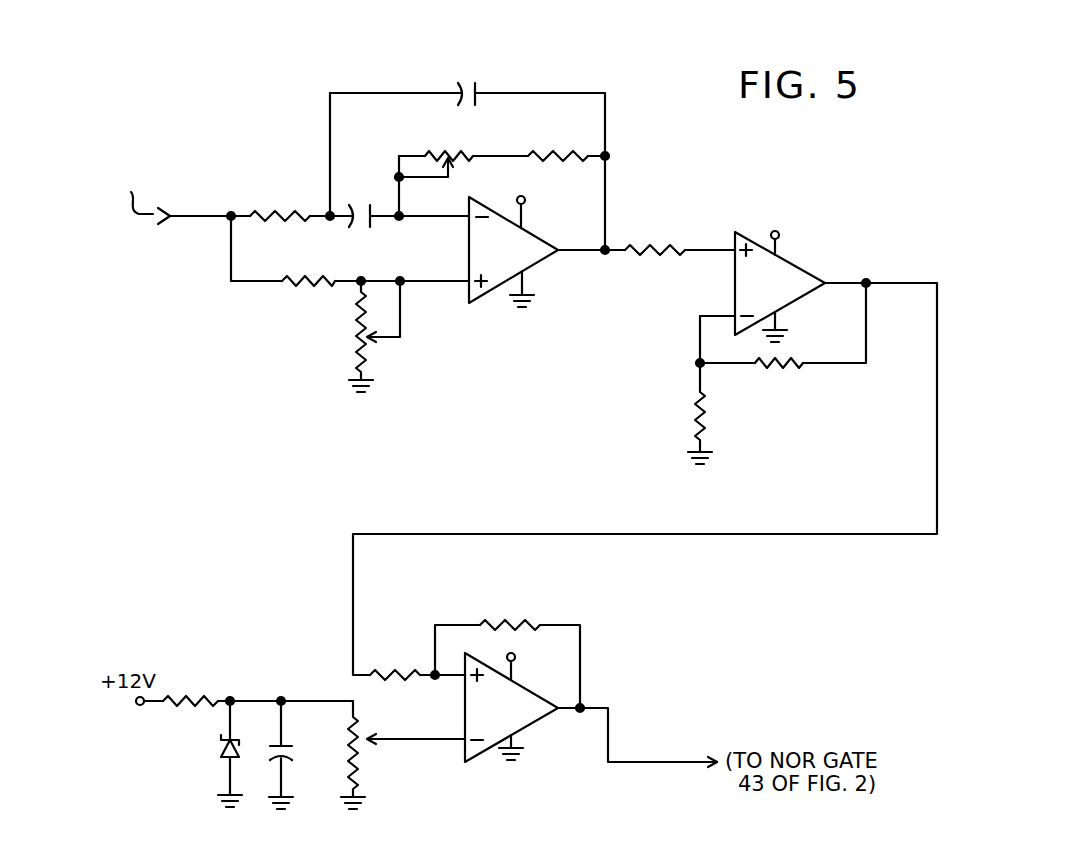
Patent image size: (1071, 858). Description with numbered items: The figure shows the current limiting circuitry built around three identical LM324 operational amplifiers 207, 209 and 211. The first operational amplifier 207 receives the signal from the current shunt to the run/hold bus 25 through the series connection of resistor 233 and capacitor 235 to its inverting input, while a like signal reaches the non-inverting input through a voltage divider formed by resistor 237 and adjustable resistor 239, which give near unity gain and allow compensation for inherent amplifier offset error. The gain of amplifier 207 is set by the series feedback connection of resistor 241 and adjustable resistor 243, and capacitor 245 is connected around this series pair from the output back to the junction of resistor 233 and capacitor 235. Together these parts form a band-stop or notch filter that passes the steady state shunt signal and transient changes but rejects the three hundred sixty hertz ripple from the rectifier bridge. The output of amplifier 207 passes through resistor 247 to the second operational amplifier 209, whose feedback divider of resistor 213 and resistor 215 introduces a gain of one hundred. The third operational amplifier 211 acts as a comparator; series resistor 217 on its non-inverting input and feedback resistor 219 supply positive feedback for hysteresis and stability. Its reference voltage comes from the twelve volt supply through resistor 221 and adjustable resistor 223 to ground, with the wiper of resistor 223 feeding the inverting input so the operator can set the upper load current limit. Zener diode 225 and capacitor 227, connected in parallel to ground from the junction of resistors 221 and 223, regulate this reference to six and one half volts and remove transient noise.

The run/hold bus 25 is at (152, 175).
The first operational amplifier 207 is at (552, 256).
The second operational amplifier 209 is at (754, 298).
The third operational amplifier 211 is at (476, 720).
The feedback resistor 213 is at (778, 368).
The resistor 215 is at (692, 421).
The resistor 217 is at (397, 672).
The feedback resistor 219 is at (507, 618).
The resistor 221 is at (188, 695).
The adjustable resistor 223 is at (367, 773).
The zener diode 225 is at (217, 758).
The capacitor 227 is at (294, 764).
The resistor 233 is at (287, 210).
The capacitor 235 is at (365, 205).
The resistor 237 is at (300, 287).
The adjustable resistor 239 is at (378, 366).
The feedback resistor 241 is at (557, 157).
The adjustable resistor 243 is at (447, 157).
The capacitor 245 is at (480, 78).
The resistor 247 is at (662, 243).